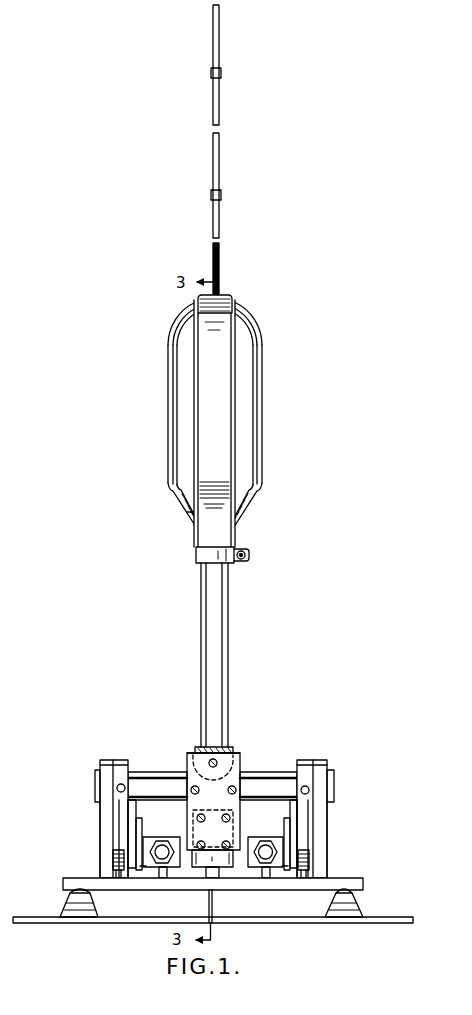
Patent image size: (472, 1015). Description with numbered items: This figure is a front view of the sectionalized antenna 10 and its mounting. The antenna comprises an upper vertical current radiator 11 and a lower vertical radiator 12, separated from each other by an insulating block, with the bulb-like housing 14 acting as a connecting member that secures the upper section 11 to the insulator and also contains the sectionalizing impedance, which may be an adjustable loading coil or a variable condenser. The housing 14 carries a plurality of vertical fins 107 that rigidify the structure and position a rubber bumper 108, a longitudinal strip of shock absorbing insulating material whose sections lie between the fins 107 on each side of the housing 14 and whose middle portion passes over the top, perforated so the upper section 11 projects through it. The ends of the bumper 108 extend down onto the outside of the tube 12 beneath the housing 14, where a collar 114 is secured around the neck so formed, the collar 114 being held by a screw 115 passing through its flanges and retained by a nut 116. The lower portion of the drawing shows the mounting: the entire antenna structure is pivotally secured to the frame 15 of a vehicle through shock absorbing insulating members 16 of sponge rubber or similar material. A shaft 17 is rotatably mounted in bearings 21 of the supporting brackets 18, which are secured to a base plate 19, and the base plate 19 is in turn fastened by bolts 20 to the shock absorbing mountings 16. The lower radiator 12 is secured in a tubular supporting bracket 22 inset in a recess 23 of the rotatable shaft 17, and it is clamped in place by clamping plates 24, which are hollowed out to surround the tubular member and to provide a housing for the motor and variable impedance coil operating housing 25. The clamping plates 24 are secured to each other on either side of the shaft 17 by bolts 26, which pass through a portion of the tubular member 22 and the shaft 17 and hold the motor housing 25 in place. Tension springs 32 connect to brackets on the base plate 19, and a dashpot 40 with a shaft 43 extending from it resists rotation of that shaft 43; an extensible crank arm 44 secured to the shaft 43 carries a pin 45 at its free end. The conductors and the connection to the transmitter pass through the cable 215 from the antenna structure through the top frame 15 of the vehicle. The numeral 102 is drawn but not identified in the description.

The sectionalized antenna 10 is at (230, 289).
The upper vertical current radiator 11 is at (219, 157).
The lower vertical radiator 12 is at (229, 614).
The bulb-like housing 14 is at (218, 421).
The frame 15 is at (276, 922).
The shock absorbing insulating members 16 is at (63, 901).
The shaft 17 is at (252, 776).
The supporting brackets 18 is at (118, 813).
The base plate 19 is at (366, 885).
The bolts 20 is at (102, 804).
The bearings 21 is at (100, 768).
The tubular supporting bracket 22 is at (233, 755).
The recess 23 is at (201, 768).
The clamping plates 24 is at (240, 758).
The motor and variable impedance coil operating housing 25 is at (205, 869).
The bolts 26 is at (211, 760).
The tension spring 32 is at (114, 860).
The dashpot 40 is at (174, 838).
The shaft 43 is at (144, 847).
The extensible crank arm 44 is at (141, 831).
The pin 45 is at (134, 800).
The housing wall 102 is at (172, 367).
The vertical fins 107 is at (255, 376).
The rubber bumper 108 is at (229, 313).
The collar 114 is at (199, 552).
The screw 115 is at (244, 551).
The nut 116 is at (247, 555).
The cable 215 is at (213, 903).